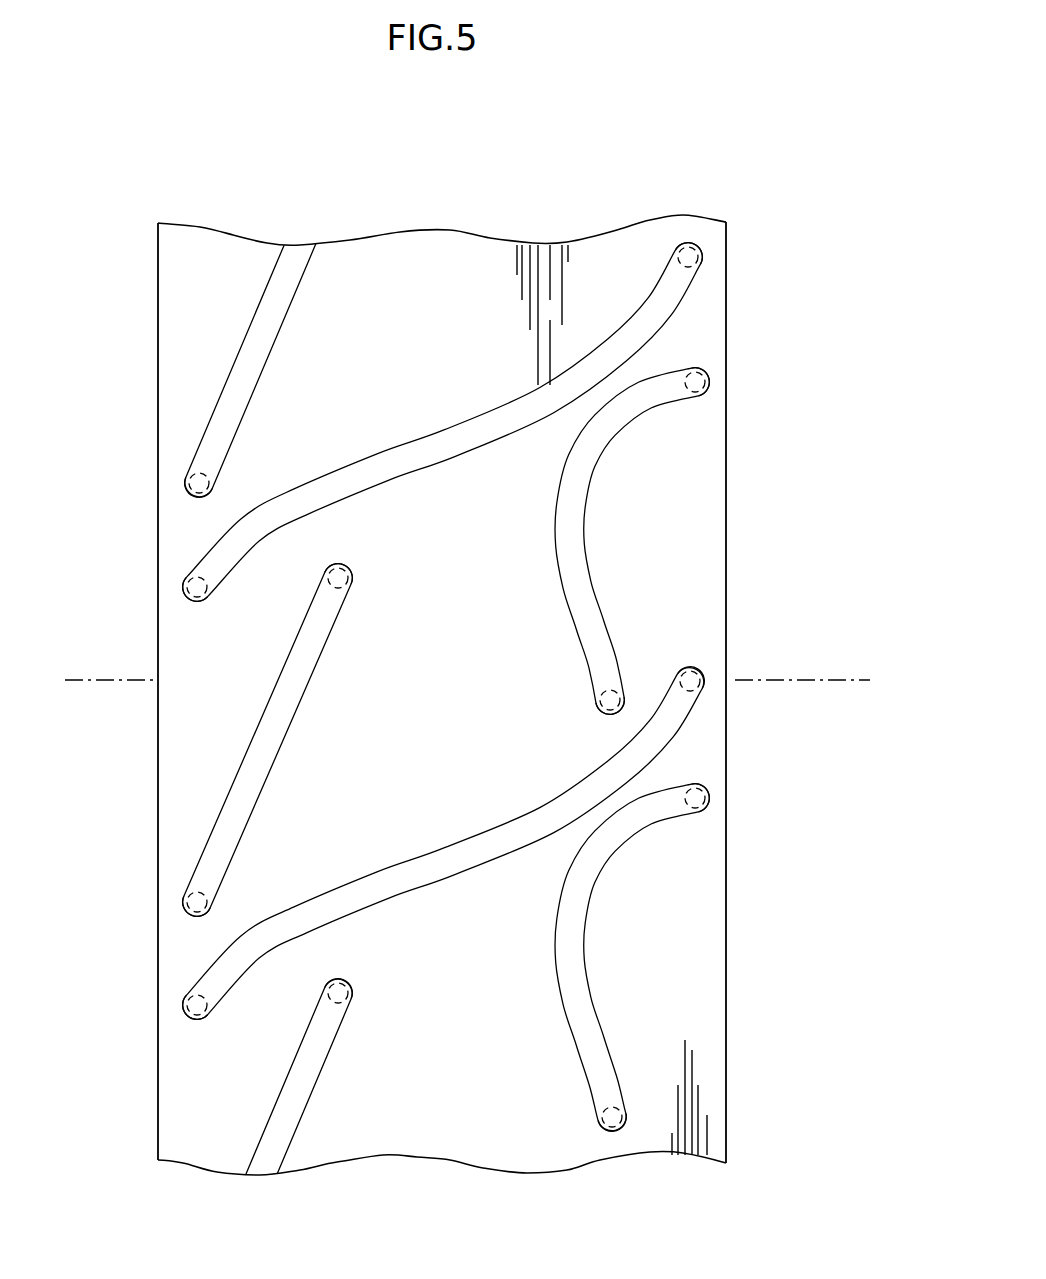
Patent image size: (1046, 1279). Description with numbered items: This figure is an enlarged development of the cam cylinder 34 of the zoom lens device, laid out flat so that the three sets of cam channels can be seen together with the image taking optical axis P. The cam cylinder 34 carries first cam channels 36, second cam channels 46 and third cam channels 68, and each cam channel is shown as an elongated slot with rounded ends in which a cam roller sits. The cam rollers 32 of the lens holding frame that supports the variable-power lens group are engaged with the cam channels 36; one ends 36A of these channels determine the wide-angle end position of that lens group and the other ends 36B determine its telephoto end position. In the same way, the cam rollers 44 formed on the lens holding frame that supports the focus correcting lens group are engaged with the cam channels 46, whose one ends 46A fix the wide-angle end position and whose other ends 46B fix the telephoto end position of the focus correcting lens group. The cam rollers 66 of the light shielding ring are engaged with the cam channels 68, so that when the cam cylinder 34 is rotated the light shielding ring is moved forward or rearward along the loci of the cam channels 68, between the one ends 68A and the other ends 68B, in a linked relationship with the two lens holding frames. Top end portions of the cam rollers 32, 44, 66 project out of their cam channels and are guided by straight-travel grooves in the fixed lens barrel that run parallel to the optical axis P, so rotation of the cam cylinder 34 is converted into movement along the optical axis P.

The cam roller 32 is at (702, 268).
The cam cylinder 34 is at (720, 520).
The cam channel 36 is at (430, 443).
The one end of cam channel 36A is at (190, 603).
The other end of cam channel 36B is at (701, 250).
The cam roller 44 is at (708, 390).
The cam channel 46 is at (566, 558).
The one end of cam channel 46A is at (608, 713).
The other end of cam channel 46B is at (707, 378).
The cam roller 66 is at (195, 476).
The cam channel 68 is at (275, 332).
The one end of cam channel 68A is at (190, 495).
The other end of cam channel 68B is at (347, 572).
The image taking optical axis P is at (73, 678).